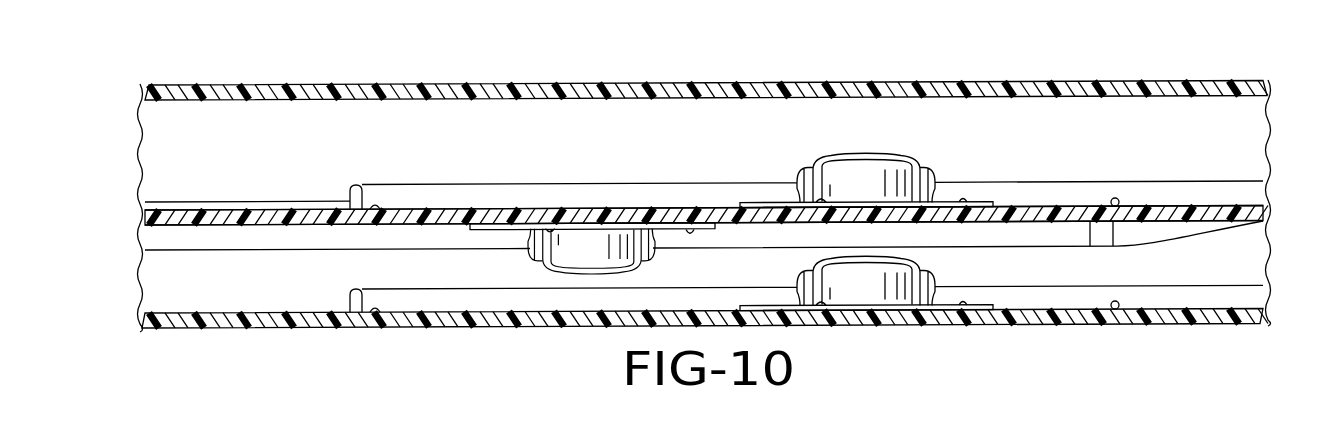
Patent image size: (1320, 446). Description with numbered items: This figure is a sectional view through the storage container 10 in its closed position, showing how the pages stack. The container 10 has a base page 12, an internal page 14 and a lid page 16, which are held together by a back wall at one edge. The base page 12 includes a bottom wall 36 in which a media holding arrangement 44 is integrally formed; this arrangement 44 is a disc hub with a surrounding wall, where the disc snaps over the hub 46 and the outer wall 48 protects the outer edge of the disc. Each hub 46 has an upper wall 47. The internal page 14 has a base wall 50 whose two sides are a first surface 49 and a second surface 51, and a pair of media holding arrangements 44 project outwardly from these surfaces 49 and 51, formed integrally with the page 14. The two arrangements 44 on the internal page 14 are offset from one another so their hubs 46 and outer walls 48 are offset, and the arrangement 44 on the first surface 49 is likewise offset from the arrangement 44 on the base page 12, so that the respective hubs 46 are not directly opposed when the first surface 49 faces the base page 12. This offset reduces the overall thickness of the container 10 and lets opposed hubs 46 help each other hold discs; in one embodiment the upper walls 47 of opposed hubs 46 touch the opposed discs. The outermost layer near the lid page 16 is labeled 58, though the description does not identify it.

The storage container 10 is at (1000, 56).
The base page 12 is at (1074, 336).
The internal page 14 is at (308, 198).
The lid page 16 is at (829, 70).
The bottom wall 36 is at (263, 328).
The media holding arrangement 44 is at (759, 177).
The hub 46 is at (597, 246).
The upper wall 47 is at (868, 257).
The outer wall 48 is at (458, 193).
The first surface 49 is at (233, 226).
The base wall 50 is at (250, 198).
The second surface 51 is at (186, 207).
The outer wall 58 is at (384, 82).